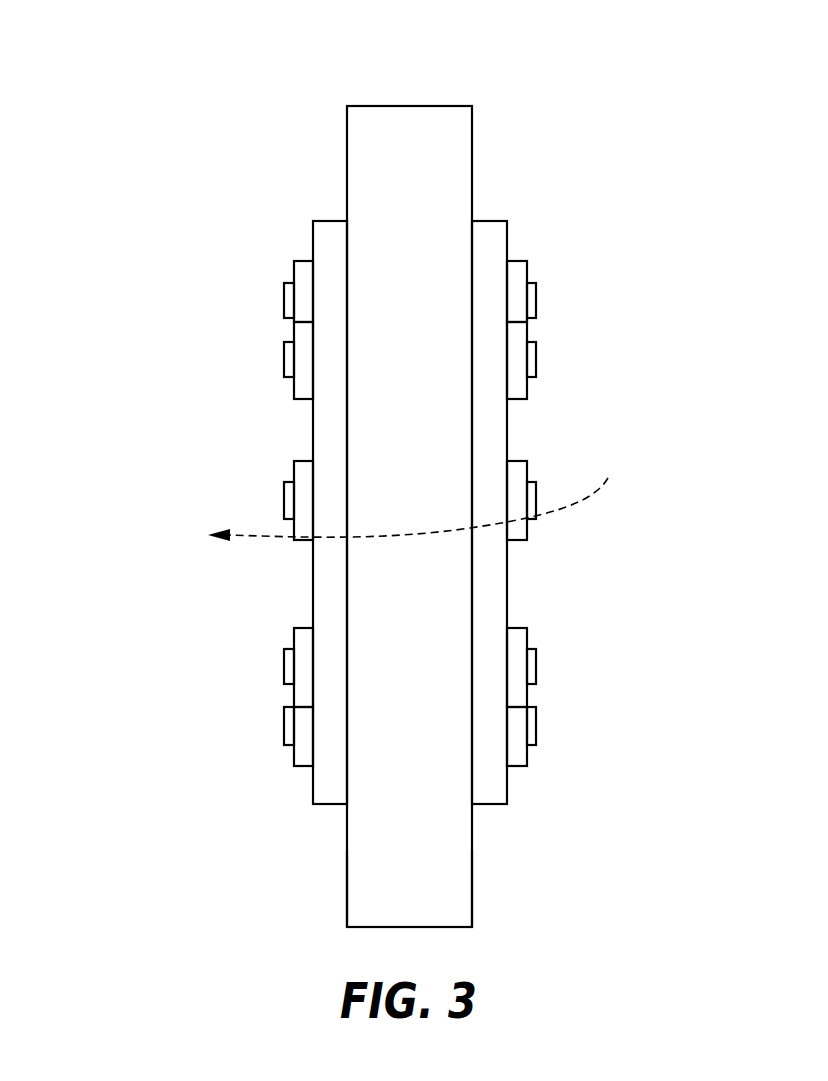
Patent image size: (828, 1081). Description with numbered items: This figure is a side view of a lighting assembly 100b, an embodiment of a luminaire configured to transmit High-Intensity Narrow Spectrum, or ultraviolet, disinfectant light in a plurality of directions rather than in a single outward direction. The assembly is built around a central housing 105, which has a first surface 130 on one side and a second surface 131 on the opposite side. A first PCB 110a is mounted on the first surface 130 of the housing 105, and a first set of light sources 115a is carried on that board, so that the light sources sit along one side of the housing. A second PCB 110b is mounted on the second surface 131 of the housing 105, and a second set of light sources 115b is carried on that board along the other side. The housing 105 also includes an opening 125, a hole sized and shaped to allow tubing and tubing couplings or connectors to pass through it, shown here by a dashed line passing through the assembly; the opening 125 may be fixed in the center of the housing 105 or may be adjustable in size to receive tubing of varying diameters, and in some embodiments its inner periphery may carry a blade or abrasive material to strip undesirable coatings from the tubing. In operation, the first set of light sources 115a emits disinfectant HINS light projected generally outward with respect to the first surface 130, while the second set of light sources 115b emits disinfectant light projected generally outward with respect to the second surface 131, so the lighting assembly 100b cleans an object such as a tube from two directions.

The lighting assembly 100b is at (158, 78).
The housing 105 is at (433, 103).
The first PCB 110a is at (511, 233).
The second PCB 110b is at (324, 236).
The first set of light sources 115a is at (540, 355).
The second set of light sources 115b is at (280, 356).
The opening 125 is at (416, 497).
The first surface 130 is at (480, 913).
The second surface 131 is at (335, 913).